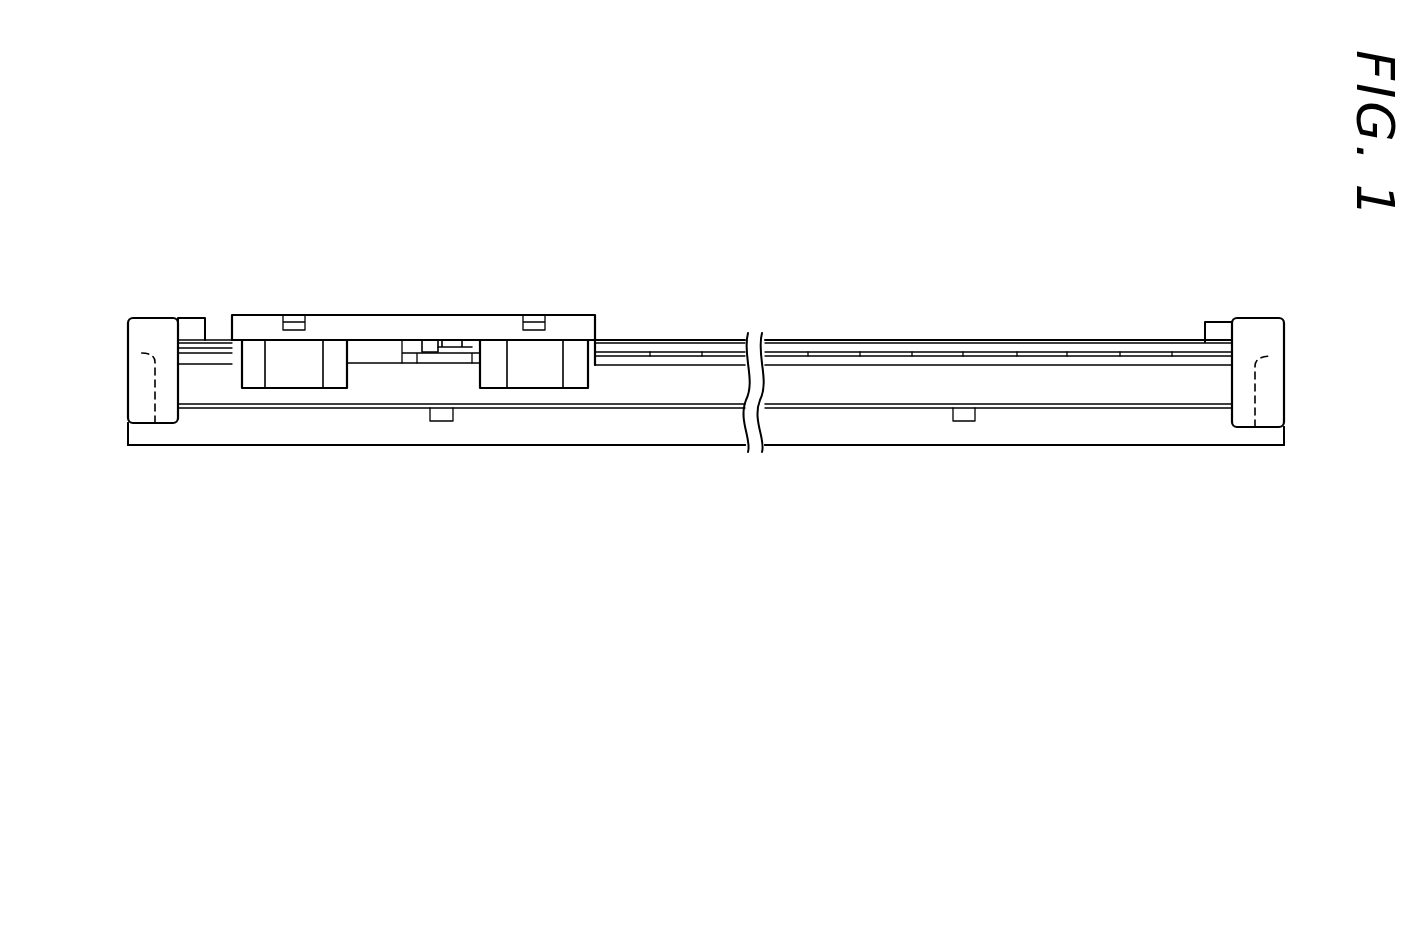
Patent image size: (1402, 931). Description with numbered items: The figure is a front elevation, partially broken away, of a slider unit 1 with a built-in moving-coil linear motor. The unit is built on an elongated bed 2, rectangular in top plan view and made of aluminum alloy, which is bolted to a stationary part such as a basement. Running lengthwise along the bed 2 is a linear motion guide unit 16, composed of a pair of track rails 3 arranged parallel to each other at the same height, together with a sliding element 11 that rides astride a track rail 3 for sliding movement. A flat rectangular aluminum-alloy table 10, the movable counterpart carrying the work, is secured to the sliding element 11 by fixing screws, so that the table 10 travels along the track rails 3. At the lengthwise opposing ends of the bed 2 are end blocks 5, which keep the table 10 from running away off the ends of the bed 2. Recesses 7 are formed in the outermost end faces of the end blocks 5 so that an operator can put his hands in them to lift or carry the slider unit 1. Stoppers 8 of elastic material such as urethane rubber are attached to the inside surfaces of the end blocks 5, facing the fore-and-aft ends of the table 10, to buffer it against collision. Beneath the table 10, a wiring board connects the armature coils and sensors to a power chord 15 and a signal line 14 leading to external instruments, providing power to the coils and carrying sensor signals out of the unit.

The slider unit 1 is at (845, 313).
The bed 2 is at (1067, 435).
The track rails 3 is at (675, 392).
The end blocks 5 is at (142, 405).
The recesses 7 is at (135, 366).
The stoppers 8 is at (200, 326).
The table 10 is at (578, 322).
The sliding element 11 is at (297, 373).
The signal line 14 is at (430, 342).
The power chord 15 is at (445, 340).
The linear motion guide unit 16 is at (370, 378).